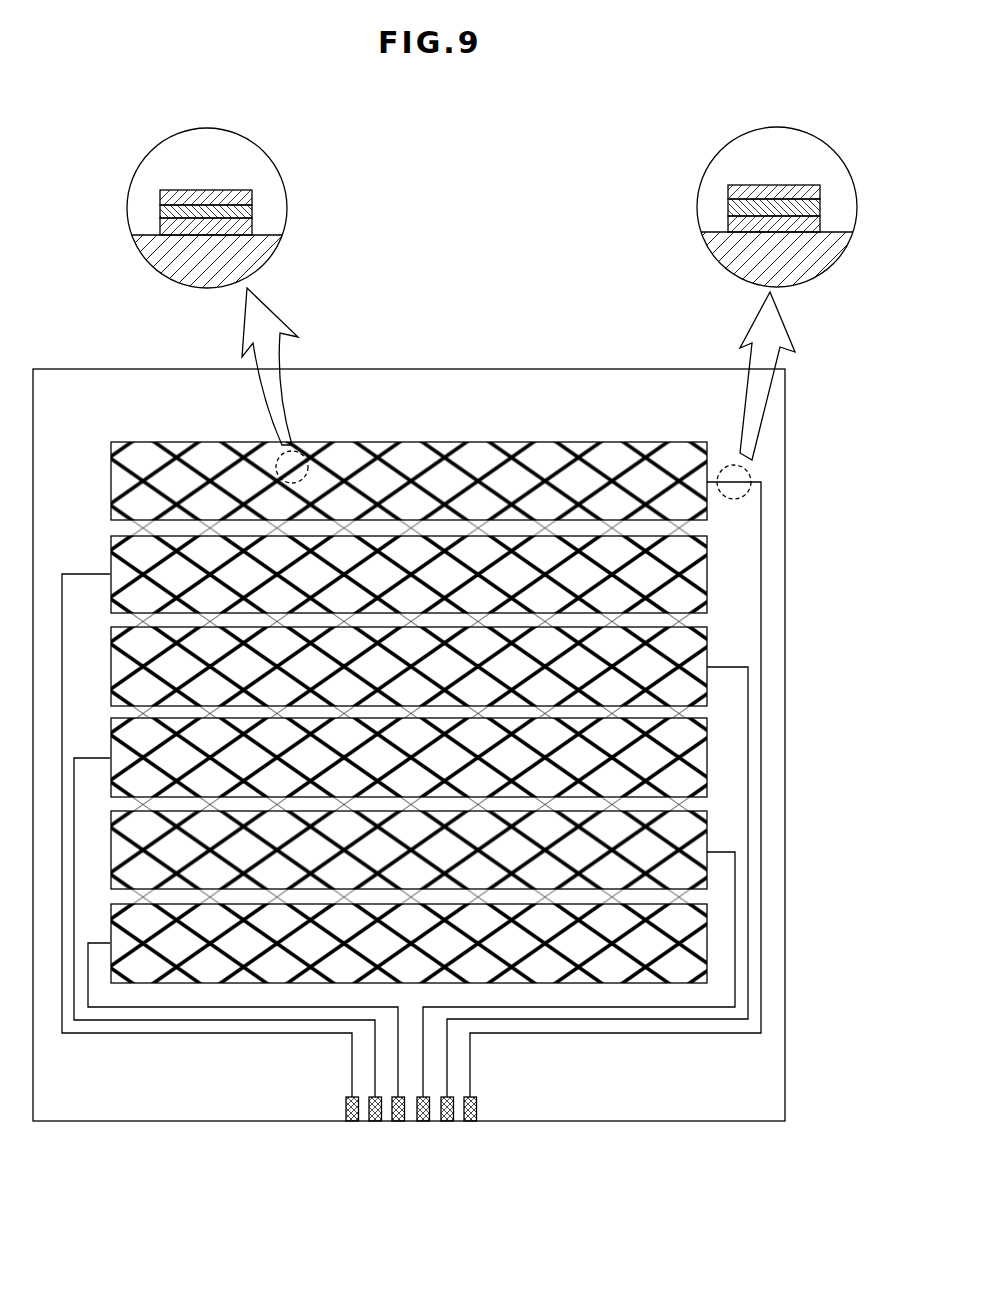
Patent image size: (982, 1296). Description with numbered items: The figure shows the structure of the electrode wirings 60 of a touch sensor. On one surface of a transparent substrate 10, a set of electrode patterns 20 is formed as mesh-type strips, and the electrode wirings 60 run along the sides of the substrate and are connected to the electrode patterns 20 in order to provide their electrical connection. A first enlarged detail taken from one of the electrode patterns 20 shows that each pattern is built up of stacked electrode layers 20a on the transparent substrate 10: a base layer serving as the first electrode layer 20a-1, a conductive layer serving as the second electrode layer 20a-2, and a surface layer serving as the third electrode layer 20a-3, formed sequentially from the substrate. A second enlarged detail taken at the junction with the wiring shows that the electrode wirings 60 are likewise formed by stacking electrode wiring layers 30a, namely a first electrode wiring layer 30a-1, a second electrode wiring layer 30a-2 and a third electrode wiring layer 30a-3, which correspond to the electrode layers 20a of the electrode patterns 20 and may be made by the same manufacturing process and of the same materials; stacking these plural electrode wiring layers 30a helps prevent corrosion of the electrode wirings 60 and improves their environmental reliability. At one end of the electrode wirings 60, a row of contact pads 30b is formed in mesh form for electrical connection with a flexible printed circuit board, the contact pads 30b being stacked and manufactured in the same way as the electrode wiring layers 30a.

The transparent substrate 10 is at (451, 381).
The electrode patterns 20 is at (578, 443).
The electrode layers 20a is at (293, 204).
The first electrode layer 20a-1 is at (247, 227).
The second electrode layer 20a-2 is at (252, 211).
The third electrode layer 20a-3 is at (252, 195).
The electrode wiring layers 30a is at (686, 197).
The first electrode wiring layer 30a-1 is at (735, 225).
The second electrode wiring layer 30a-2 is at (728, 208).
The third electrode wiring layer 30a-3 is at (728, 191).
The contact pads 30b is at (421, 1122).
The electrode wirings 60 is at (762, 763).